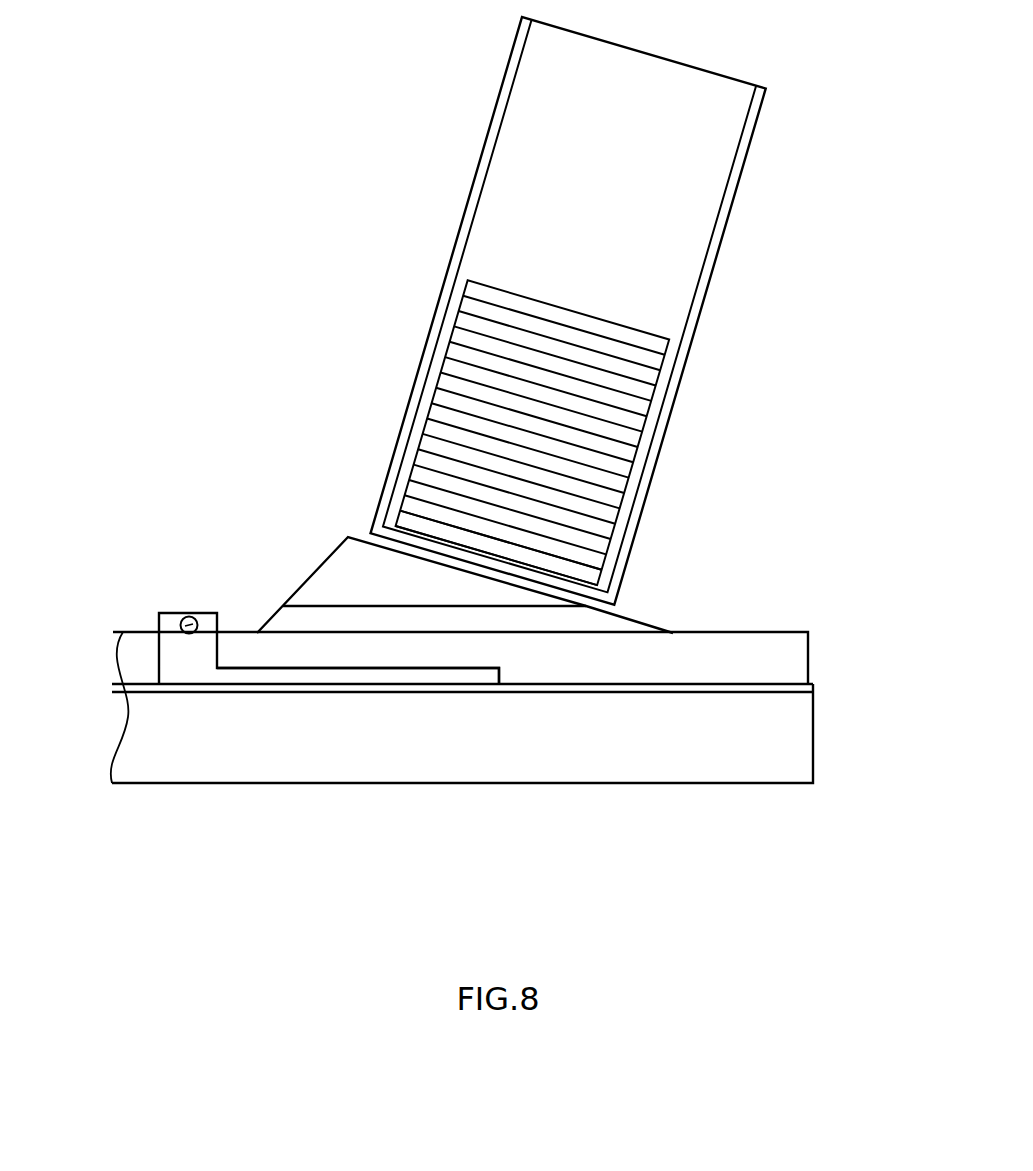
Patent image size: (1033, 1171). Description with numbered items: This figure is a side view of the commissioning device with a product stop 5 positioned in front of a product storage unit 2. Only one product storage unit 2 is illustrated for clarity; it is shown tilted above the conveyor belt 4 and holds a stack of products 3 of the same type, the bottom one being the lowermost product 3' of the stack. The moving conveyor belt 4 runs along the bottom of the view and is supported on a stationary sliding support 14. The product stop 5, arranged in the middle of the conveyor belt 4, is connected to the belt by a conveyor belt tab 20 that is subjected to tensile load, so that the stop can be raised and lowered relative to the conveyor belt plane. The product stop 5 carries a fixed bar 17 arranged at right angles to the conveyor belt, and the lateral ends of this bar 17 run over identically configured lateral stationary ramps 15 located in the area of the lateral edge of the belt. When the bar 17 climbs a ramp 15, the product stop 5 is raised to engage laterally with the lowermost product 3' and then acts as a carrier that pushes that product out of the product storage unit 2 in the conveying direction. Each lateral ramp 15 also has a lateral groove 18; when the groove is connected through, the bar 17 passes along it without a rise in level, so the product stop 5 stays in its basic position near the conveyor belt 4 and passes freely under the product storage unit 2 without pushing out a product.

The product storage unit 2 is at (505, 105).
The product 3 is at (519, 380).
The lowermost product of the stack 3' is at (457, 474).
The lateral stationary ramp 15 is at (348, 580).
The bar 17 is at (200, 618).
The product stop 5 is at (191, 662).
The lateral groove 18 is at (372, 620).
The conveyor belt tab 20 is at (449, 676).
The conveyor belt 4 is at (582, 683).
The stationary sliding support 14 is at (754, 740).